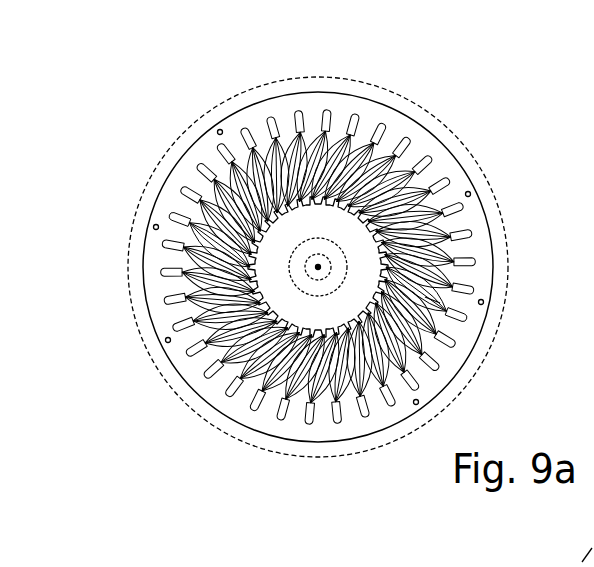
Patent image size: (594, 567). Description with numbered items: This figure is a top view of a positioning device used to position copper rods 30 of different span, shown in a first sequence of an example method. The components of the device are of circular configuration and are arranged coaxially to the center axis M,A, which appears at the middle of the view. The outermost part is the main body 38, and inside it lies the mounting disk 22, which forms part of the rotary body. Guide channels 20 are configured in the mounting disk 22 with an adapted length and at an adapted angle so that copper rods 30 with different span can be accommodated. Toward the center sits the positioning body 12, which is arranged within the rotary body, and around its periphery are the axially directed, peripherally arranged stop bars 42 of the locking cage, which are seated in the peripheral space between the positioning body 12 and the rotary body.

The positioning body 12 is at (319, 218).
The guide channels 20 is at (312, 345).
The mounting disk 22 is at (178, 192).
The copper rods 30 is at (440, 303).
The main body 38 is at (213, 417).
The stop bars 42 is at (348, 210).
The center axis M,A is at (318, 267).